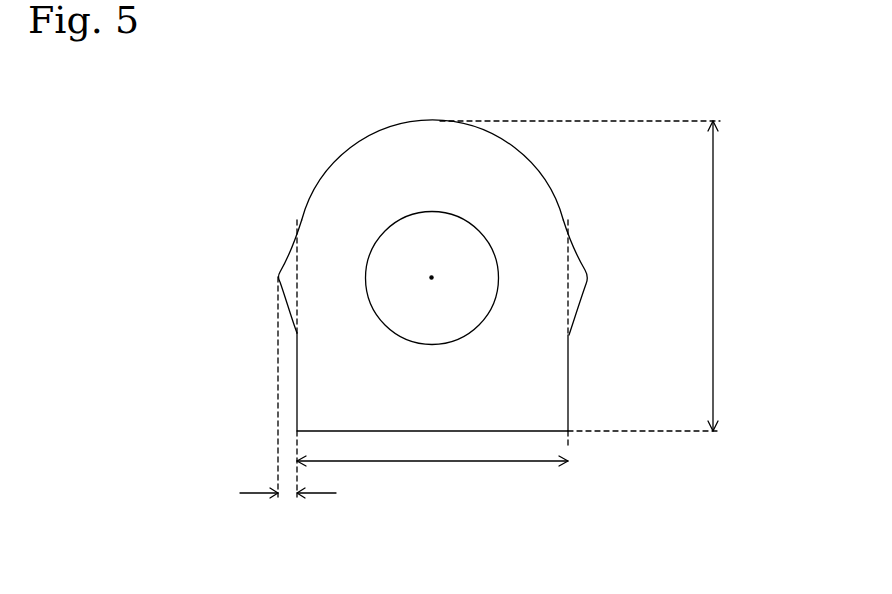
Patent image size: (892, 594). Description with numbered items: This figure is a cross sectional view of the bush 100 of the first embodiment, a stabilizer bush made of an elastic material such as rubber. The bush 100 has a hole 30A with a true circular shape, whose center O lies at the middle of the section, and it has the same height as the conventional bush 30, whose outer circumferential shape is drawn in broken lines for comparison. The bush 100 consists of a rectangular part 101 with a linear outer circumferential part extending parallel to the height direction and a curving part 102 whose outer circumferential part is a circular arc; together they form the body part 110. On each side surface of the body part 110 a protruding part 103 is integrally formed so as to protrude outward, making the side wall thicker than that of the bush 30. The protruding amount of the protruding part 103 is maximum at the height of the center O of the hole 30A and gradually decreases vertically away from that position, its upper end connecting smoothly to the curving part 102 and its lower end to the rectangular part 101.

The bush 100 is at (528, 109).
The rectangular part 101 is at (306, 404).
The curving part 102 is at (372, 155).
The protruding part 103 is at (278, 276).
The body part 110 is at (512, 145).
The bush 30 is at (568, 258).
The hole 30A is at (498, 267).
The center of the hole O is at (432, 277).